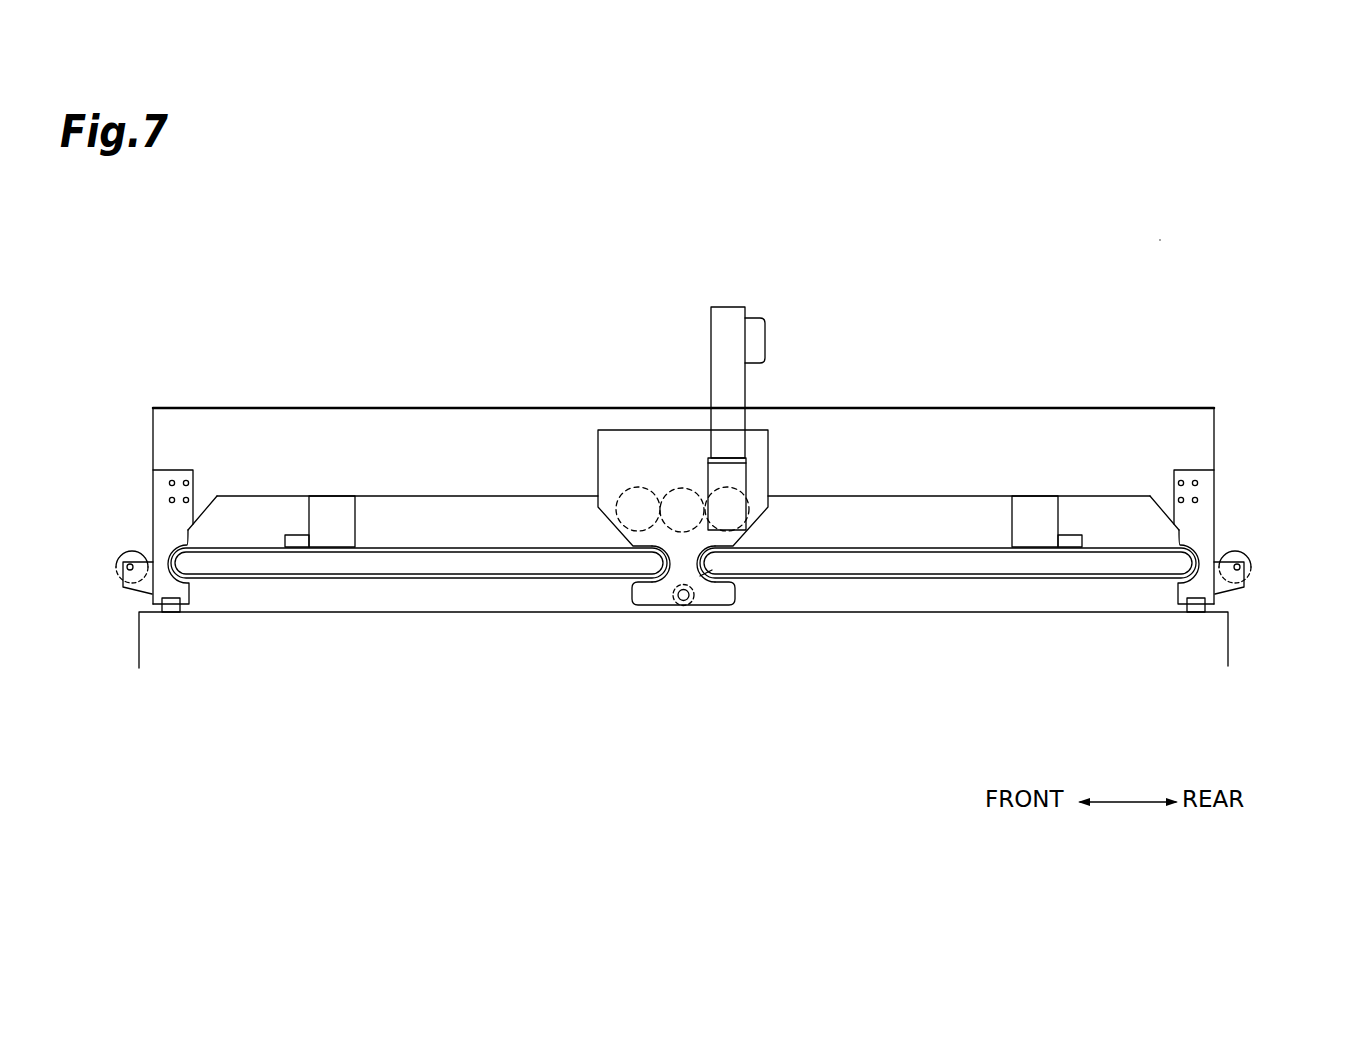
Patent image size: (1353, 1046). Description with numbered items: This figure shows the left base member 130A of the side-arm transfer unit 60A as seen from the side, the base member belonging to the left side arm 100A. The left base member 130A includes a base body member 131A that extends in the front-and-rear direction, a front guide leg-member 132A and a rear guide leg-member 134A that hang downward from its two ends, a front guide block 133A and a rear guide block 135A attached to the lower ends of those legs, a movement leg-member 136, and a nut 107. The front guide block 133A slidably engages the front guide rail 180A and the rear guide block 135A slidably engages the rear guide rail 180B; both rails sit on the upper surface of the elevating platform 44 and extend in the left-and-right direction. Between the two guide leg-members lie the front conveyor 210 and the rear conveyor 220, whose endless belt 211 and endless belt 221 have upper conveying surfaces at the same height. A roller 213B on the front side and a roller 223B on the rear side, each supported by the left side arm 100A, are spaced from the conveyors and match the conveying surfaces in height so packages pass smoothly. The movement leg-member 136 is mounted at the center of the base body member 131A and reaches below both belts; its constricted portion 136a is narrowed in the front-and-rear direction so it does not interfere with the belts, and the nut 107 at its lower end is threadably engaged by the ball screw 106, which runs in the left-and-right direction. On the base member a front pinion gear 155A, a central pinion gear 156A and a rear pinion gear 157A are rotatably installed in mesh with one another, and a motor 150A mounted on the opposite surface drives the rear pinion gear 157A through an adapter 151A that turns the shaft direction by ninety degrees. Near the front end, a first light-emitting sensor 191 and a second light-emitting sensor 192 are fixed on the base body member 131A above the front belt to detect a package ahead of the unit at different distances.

The left side arm 100A is at (1244, 390).
The side-arm transfer unit 60A is at (1149, 294).
The left base member 130A is at (1096, 404).
The base body member 131A is at (340, 447).
The front guide leg-member 132A is at (190, 517).
The rear guide leg-member 134A is at (1200, 520).
The front guide block 133A is at (187, 600).
The rear guide block 135A is at (1180, 592).
The front guide rail 180A is at (168, 612).
The rear guide rail 180B is at (1198, 612).
The roller 213B is at (118, 570).
The roller 223B is at (1250, 566).
The front conveyor 210 is at (455, 580).
The endless belt 211 is at (513, 576).
The rear conveyor 220 is at (930, 580).
The endless belt 221 is at (840, 580).
The first light-emitting sensor 191 is at (298, 548).
The second light-emitting sensor 192 is at (338, 510).
The motor 150A is at (730, 316).
The adapter 151A is at (707, 472).
The front pinion gear 155A is at (636, 486).
The central pinion gear 156A is at (681, 486).
The rear pinion gear 157A is at (749, 507).
The movement leg-member 136 is at (741, 595).
The constricted portion 136a is at (704, 578).
The ball screw 106 is at (683, 602).
The nut 107 is at (674, 592).
The elevating platform 44 is at (1230, 637).